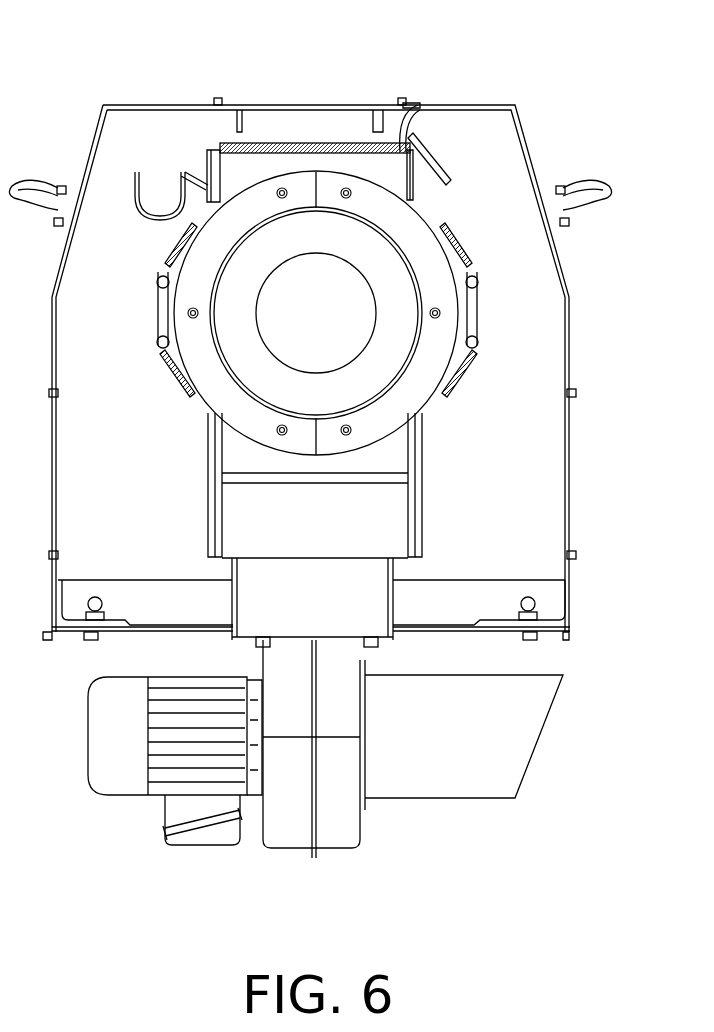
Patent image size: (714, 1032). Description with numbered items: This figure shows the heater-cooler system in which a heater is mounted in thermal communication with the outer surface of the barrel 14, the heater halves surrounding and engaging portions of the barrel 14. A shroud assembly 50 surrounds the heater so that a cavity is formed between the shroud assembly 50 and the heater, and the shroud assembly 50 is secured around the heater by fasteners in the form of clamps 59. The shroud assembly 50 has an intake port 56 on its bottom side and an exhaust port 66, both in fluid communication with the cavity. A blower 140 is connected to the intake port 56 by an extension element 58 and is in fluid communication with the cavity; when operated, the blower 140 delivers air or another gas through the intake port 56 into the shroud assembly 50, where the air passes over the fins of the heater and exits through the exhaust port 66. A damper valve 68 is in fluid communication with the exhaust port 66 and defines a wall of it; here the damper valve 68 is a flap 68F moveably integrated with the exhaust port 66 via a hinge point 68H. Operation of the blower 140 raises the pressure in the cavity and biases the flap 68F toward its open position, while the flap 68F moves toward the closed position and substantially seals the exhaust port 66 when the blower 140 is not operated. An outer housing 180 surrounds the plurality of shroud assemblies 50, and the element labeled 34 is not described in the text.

The barrel 14 is at (377, 262).
The rotor cover plate 34 is at (398, 402).
The shroud assembly 50 is at (193, 247).
The intake port 56 is at (395, 523).
The extension element 58 is at (373, 590).
The clamps 59 is at (155, 317).
The exhaust port 66 is at (368, 147).
The damper valve 68 is at (465, 162).
The flap 68F is at (433, 157).
The hinge point 68H is at (410, 140).
The blower 140 is at (345, 835).
The outer housing 180 is at (572, 320).